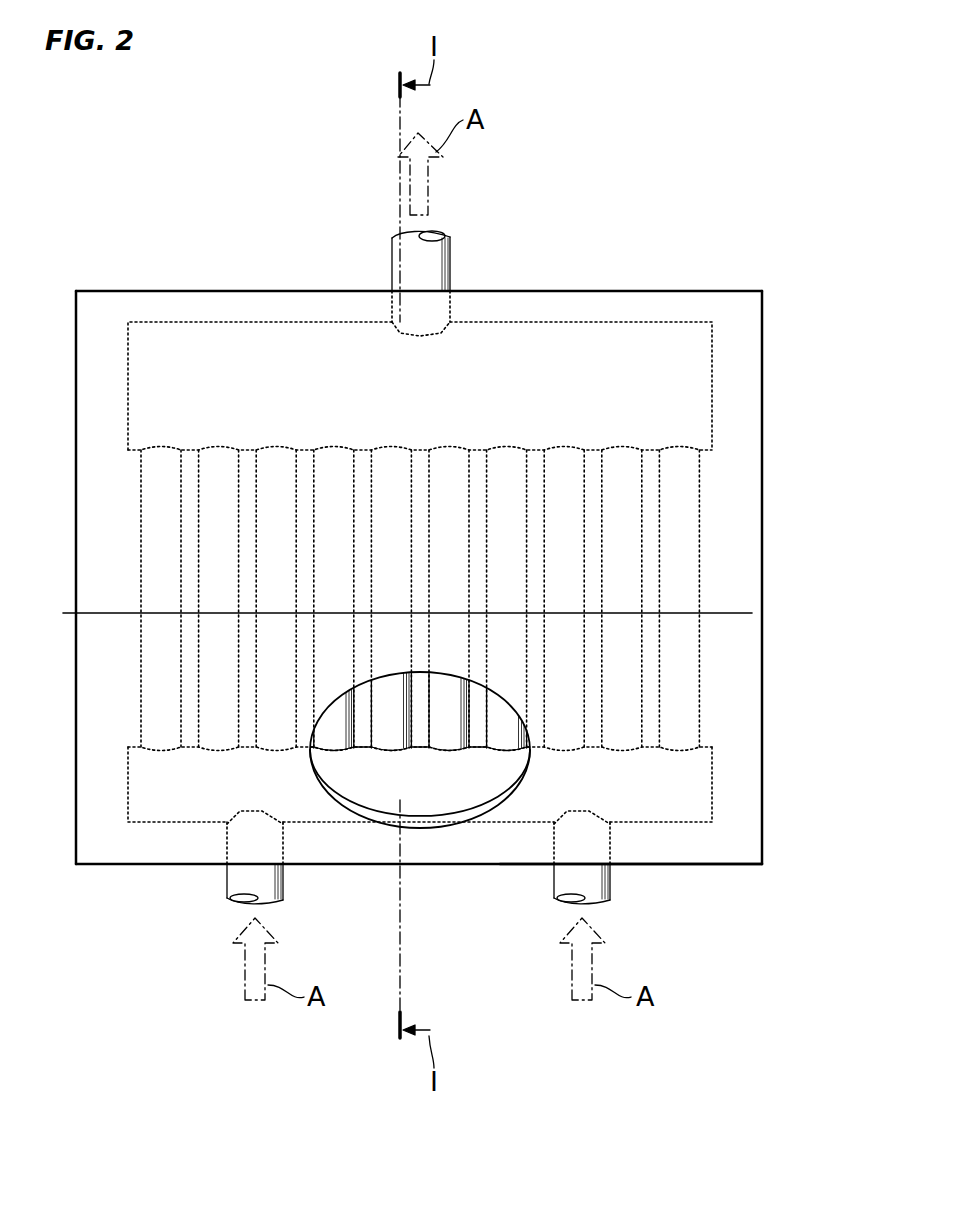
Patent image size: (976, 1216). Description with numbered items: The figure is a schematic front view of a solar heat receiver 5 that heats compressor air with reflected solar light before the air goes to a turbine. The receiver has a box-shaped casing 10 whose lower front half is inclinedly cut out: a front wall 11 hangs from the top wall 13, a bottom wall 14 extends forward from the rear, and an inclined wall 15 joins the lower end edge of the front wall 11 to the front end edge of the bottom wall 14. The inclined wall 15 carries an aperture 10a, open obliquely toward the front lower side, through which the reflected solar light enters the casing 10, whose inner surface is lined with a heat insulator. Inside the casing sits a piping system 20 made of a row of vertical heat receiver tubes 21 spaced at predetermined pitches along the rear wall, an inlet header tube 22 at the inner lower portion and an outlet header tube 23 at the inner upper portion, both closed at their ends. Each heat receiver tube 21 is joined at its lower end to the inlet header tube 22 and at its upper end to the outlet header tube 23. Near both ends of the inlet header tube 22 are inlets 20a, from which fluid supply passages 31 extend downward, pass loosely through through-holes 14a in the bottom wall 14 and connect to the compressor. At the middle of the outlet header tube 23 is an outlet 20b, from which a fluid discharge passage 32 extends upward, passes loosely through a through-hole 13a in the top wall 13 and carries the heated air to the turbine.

The solar heat receiver 5 is at (720, 136).
The casing 10 is at (748, 286).
The aperture 10a is at (428, 824).
The front wall 11 is at (736, 537).
The top wall 13 is at (632, 290).
The through-hole 13a is at (405, 290).
The bottom wall 14 is at (712, 868).
The through-hole 14a is at (283, 880).
The inclined wall 15 is at (735, 848).
The piping system 20 is at (143, 828).
The inlet 20a is at (243, 812).
The outlet 20b is at (402, 333).
The heat receiver tubes 21 is at (568, 655).
The inlet header tube 22 is at (692, 793).
The outlet header tube 23 is at (696, 403).
The fluid supply passage 31 is at (226, 878).
The fluid discharge passage 32 is at (430, 275).